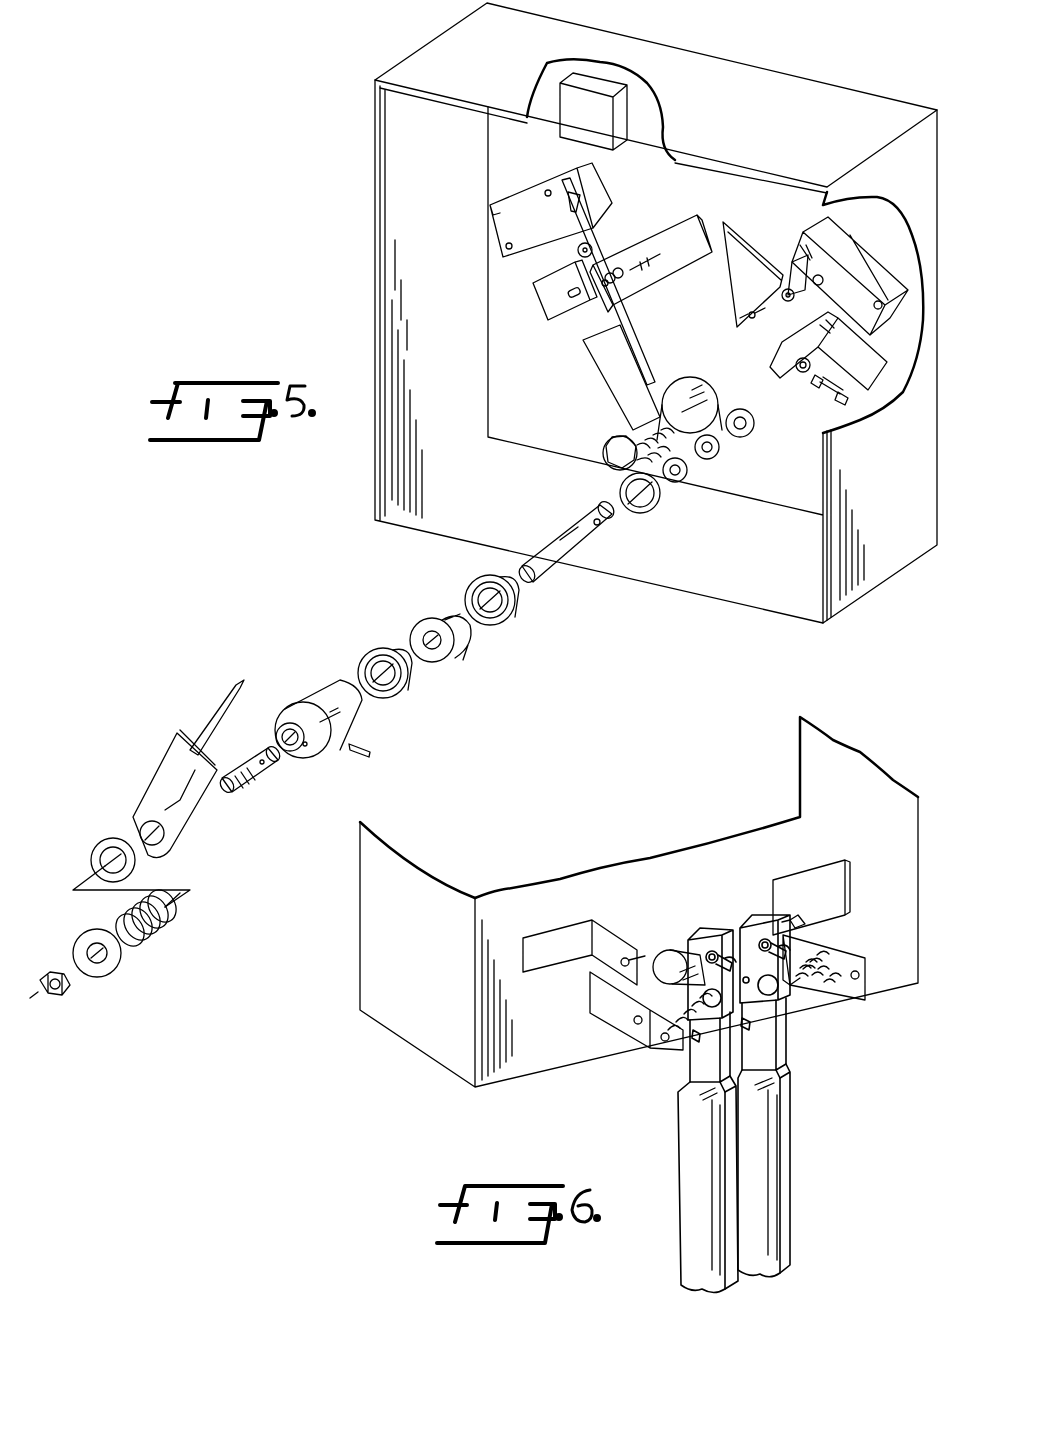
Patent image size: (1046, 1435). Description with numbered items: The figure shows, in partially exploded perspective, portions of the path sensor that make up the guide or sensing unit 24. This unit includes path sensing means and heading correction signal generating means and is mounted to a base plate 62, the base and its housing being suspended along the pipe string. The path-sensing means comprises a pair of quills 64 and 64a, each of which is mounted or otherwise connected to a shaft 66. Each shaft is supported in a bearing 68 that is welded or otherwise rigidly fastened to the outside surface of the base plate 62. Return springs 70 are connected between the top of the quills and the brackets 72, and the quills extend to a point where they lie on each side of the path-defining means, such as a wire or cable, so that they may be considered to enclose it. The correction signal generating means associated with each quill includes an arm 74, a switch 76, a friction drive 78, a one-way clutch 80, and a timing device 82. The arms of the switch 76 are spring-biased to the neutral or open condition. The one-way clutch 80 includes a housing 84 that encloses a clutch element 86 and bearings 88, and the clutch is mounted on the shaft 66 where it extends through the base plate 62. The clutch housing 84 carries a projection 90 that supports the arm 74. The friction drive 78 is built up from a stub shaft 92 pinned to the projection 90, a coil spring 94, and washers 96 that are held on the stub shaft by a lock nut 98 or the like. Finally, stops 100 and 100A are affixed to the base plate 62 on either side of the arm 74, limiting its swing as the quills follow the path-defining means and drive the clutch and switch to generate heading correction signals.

In FIG. 5, the guide or sensing unit 24 is at (362, 231).
In FIG. 6, the guide or sensing unit 24 is at (395, 1046).
In FIG. 5, the base plate 62 is at (372, 460).
In FIG. 6, the base plate 62 is at (518, 1080).
In FIG. 6, the quill 64 is at (688, 1250).
In FIG. 6, the quill 64a is at (778, 1238).
In FIG. 5, the shaft 66 is at (560, 555).
In FIG. 6, the shaft 66 is at (784, 995).
In FIG. 6, the bearing 68 is at (672, 950).
In FIG. 6, the return springs 70 is at (815, 975).
In FIG. 6, the brackets 72 is at (836, 958).
In FIG. 5, the arm 74 is at (605, 375).
In FIG. 5, the switch 76 is at (590, 232).
In FIG. 5, the friction drive 78 is at (140, 955).
In FIG. 5, the one-way clutch 80 is at (372, 638).
In FIG. 5, the timing device 82 is at (568, 133).
In FIG. 5, the clutch housing 84 is at (330, 680).
In FIG. 5, the clutch element 86 is at (428, 615).
In FIG. 5, the bearings 88 is at (405, 690).
In FIG. 5, the projection 90 is at (298, 718).
In FIG. 5, the stub shaft 92 is at (256, 775).
In FIG. 5, the coil spring 94 is at (160, 930).
In FIG. 5, the washers 96 is at (108, 840).
In FIG. 5, the lock nut 98 is at (58, 1000).
In FIG. 5, the stop 100 is at (638, 283).
In FIG. 5, the stop 100A is at (578, 308).